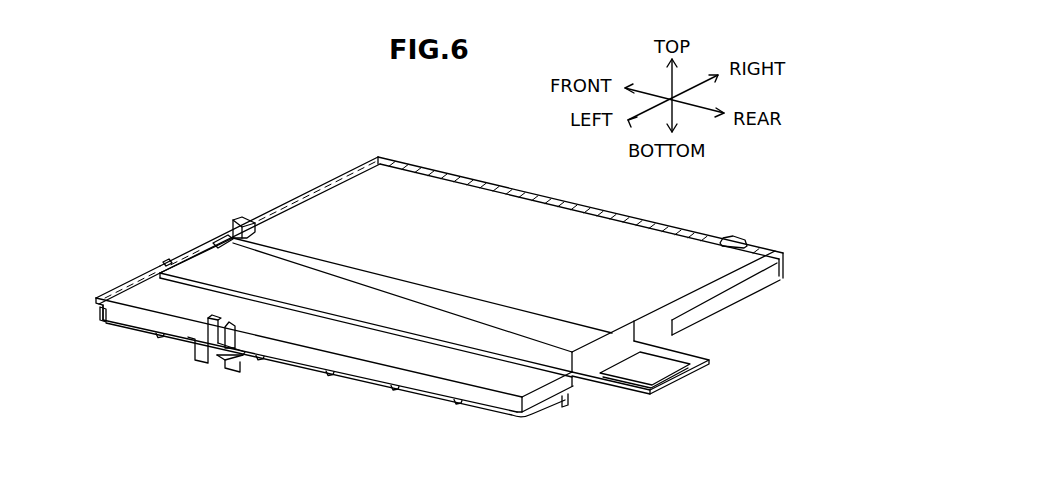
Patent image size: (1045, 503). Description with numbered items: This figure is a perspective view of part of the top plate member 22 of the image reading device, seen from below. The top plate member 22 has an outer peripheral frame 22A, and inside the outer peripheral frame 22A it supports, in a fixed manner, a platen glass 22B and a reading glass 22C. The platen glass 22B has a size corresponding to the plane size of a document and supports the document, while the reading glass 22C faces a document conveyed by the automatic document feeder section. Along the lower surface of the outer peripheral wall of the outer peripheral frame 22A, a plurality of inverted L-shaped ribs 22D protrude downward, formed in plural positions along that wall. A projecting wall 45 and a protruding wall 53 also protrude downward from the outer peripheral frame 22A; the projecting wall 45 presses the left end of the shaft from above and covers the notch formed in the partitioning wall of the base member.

The top plate member 22 is at (463, 167).
The outer peripheral frame 22A is at (120, 290).
The platen glass 22B is at (285, 204).
The reading glass 22C is at (198, 250).
The inverted L-shaped ribs 22D is at (99, 325).
The projecting wall 45 is at (219, 362).
The protruding wall 53 is at (368, 382).